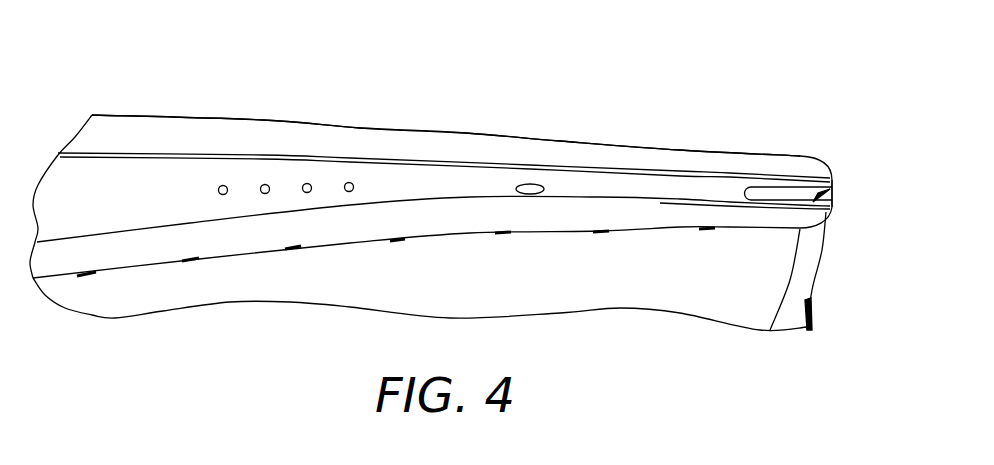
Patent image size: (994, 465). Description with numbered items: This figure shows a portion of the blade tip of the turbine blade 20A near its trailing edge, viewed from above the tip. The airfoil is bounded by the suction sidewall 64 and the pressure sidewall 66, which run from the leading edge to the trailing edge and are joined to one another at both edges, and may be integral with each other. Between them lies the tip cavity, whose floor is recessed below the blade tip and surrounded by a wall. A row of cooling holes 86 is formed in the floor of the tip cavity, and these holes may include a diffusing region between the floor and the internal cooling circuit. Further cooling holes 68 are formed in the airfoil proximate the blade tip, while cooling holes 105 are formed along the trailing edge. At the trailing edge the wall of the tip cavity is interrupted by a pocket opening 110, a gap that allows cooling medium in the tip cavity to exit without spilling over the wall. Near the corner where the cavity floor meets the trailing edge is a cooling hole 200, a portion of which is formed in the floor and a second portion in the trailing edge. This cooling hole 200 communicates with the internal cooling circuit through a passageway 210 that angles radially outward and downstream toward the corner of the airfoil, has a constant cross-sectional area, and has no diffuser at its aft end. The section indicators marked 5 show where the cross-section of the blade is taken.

The turbine blade 20A is at (590, 53).
The suction sidewall 64 is at (468, 138).
The pressure sidewall 66 is at (341, 235).
The cooling holes 68 is at (492, 235).
The cooling holes 86 is at (262, 184).
The cooling holes 105 is at (815, 312).
The pocket opening 110 is at (850, 208).
The cooling hole 200 is at (773, 190).
The passageway 210 is at (835, 178).
The section line 5 is at (213, 190).